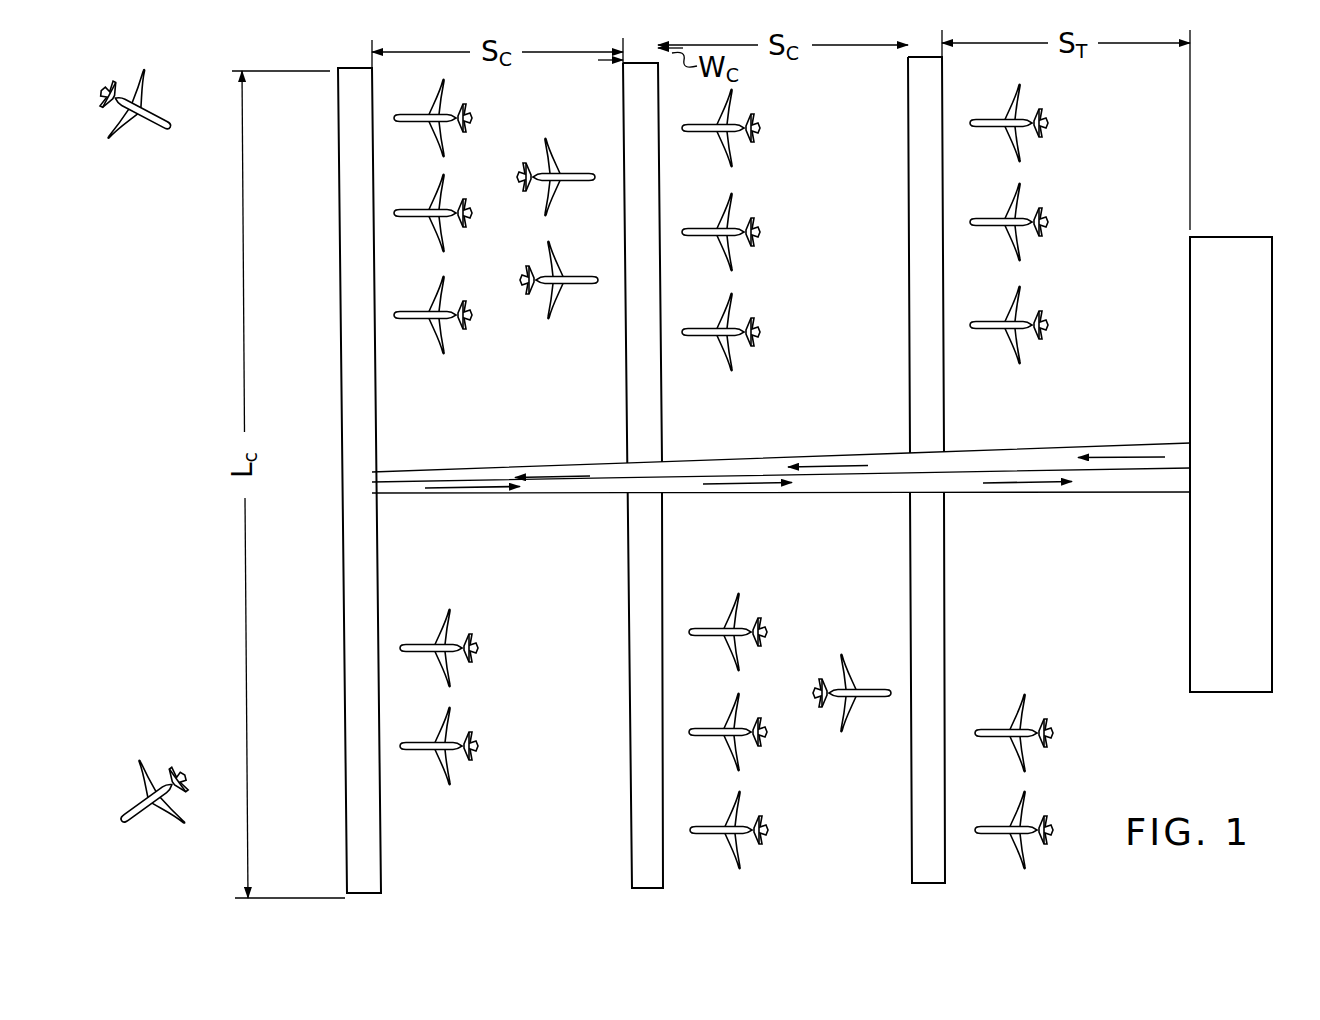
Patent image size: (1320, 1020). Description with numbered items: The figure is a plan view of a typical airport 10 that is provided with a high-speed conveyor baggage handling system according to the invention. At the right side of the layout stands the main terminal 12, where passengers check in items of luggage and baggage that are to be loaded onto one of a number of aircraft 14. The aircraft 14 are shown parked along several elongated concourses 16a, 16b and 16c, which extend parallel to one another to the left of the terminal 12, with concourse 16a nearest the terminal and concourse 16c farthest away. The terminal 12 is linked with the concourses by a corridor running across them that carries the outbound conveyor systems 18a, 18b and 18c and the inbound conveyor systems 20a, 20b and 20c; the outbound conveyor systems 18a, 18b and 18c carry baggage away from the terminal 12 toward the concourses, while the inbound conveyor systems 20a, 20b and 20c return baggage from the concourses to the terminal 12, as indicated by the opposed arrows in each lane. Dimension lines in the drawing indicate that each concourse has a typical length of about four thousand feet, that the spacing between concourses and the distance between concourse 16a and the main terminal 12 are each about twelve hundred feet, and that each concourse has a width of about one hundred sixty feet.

The airport 10 is at (1202, 210).
The main terminal 12 is at (1258, 692).
The aircraft 14 is at (468, 116).
The concourse 16a is at (912, 860).
The concourse 16b is at (632, 865).
The concourse 16c is at (381, 871).
The outbound conveyor system 18a is at (1142, 456).
The outbound conveyor system 18b is at (812, 466).
The outbound conveyor system 18c is at (548, 475).
The inbound conveyor system 20a is at (1003, 485).
The inbound conveyor system 20b is at (733, 487).
The inbound conveyor system 20c is at (440, 490).